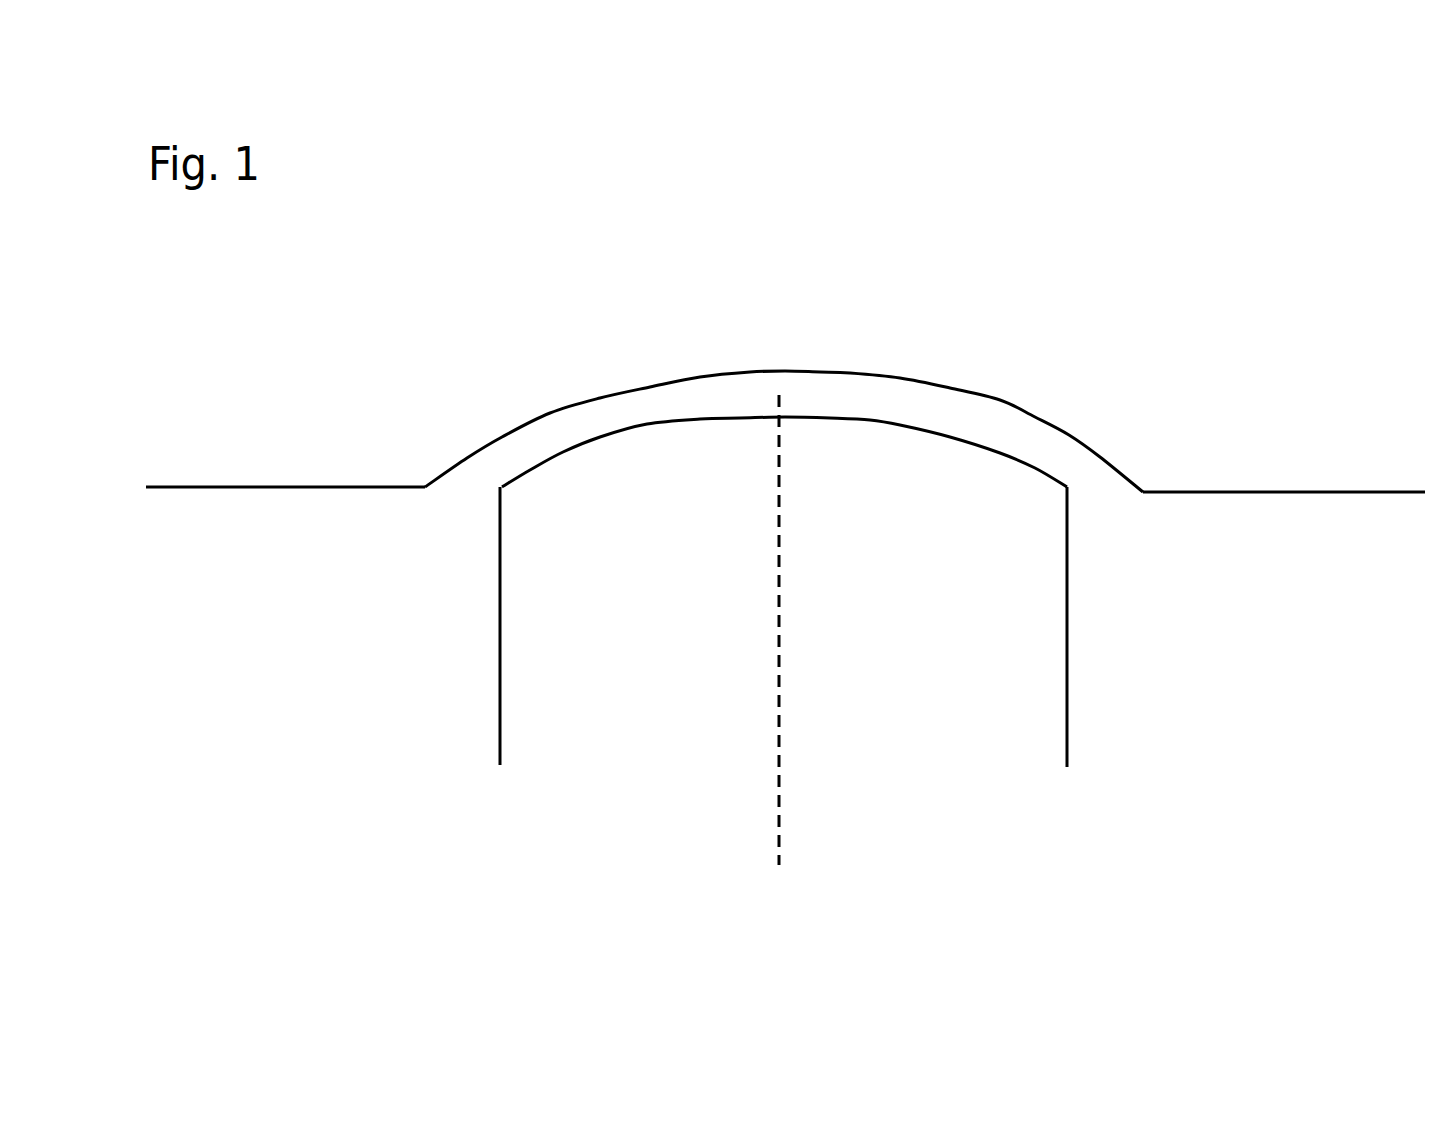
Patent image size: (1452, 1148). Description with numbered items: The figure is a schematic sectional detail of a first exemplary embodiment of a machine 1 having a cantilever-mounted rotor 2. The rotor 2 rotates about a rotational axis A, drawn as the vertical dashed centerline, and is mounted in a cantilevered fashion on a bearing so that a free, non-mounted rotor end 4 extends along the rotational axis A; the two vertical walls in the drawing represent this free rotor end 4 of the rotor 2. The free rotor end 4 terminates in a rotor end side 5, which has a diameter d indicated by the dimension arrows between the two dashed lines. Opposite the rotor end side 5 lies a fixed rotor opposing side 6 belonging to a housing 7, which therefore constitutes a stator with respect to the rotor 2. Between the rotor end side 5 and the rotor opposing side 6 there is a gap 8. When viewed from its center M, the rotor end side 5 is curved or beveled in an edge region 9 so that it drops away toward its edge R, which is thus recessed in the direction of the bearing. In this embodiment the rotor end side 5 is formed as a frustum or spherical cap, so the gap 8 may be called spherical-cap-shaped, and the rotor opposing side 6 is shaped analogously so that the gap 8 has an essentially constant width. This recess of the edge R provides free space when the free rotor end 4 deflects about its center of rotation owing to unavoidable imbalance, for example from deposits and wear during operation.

The machine 1 is at (1346, 372).
The rotor 2 is at (1125, 689).
The free rotor end 4 is at (485, 662).
The rotor end side 5 is at (640, 398).
The rotor opposing side 6 is at (967, 417).
The housing 7 is at (1240, 472).
The gap 8 is at (884, 401).
The edge region 9 is at (565, 472).
The center M is at (779, 418).
The edge R is at (500, 487).
The rotational axis A is at (779, 660).
The diameter d is at (1069, 487).